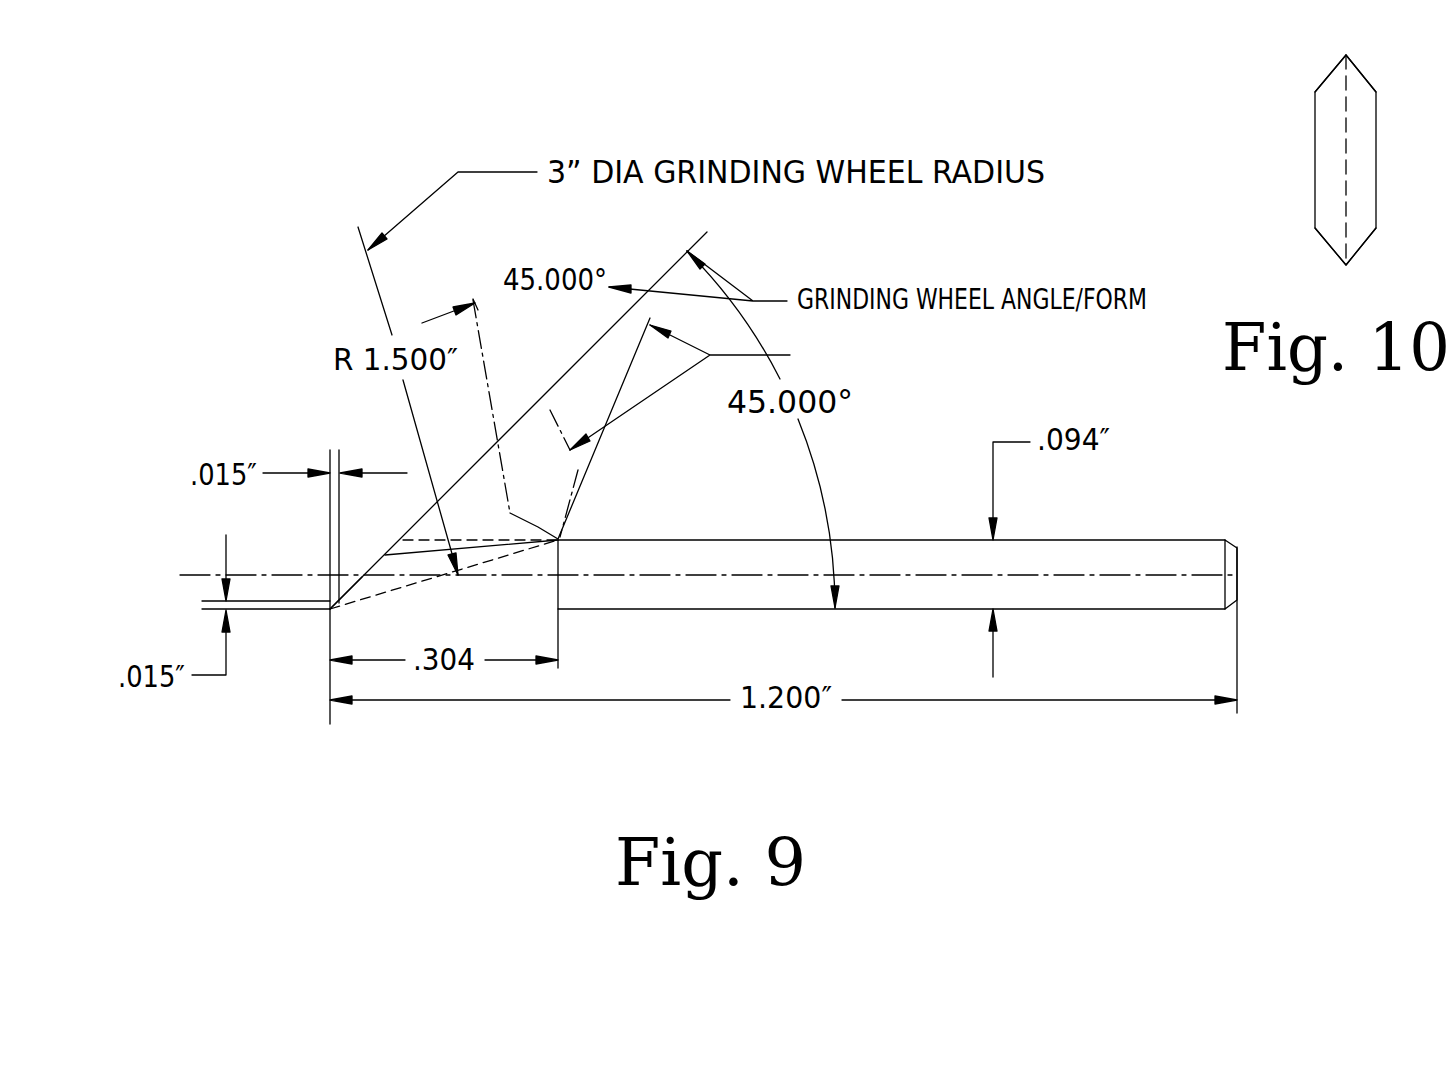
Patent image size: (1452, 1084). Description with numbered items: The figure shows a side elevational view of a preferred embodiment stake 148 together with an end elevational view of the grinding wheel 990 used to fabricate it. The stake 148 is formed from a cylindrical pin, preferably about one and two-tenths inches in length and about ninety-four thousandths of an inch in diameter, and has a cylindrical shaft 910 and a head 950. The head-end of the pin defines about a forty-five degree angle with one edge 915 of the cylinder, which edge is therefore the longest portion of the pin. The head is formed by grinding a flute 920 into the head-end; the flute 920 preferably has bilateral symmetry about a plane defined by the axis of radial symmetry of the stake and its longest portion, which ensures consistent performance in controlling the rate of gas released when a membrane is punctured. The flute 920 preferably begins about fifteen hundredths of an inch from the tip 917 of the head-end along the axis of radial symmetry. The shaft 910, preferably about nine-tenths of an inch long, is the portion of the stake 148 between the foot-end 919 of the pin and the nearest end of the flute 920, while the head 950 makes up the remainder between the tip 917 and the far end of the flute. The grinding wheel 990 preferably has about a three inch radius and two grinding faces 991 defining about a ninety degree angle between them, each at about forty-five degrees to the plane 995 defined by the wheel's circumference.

In FIG. 9, the stake 148 is at (227, 407).
In FIG. 9, the cylindrical shaft 910 is at (1237, 750).
In FIG. 9, the edge 915 is at (363, 611).
In FIG. 9, the tip 917 is at (330, 609).
In FIG. 9, the foot-end 919 is at (1238, 558).
In FIG. 9, the flute 920 is at (392, 588).
In FIG. 9, the head 950 is at (568, 750).
In FIG. 10, the grinding wheel 990 is at (1302, 128).
In FIG. 10, the grinding faces 991 is at (1332, 70).
In FIG. 10, the plane 995 is at (1343, 268).